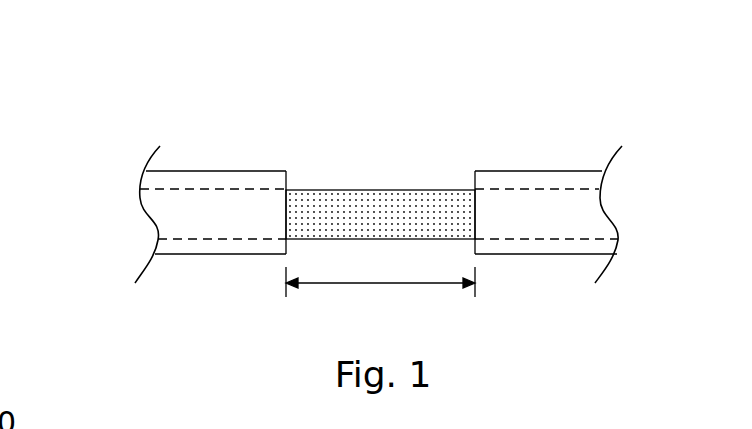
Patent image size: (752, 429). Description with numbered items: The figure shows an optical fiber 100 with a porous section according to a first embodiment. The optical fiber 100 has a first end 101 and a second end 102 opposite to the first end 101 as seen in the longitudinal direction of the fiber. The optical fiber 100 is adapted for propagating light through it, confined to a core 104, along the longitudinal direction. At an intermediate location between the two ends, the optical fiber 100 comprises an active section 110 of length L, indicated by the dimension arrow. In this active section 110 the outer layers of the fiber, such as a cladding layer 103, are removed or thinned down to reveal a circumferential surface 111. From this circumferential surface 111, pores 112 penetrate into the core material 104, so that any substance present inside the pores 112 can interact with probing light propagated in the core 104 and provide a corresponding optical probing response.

The optical fiber 100 is at (108, 89).
The first end 101 is at (117, 214).
The second end 102 is at (640, 214).
The cladding layer 103 is at (235, 182).
The core 104 is at (233, 213).
The active section 110 is at (377, 205).
The circumferential surface 111 is at (393, 190).
The pores 112 is at (423, 203).